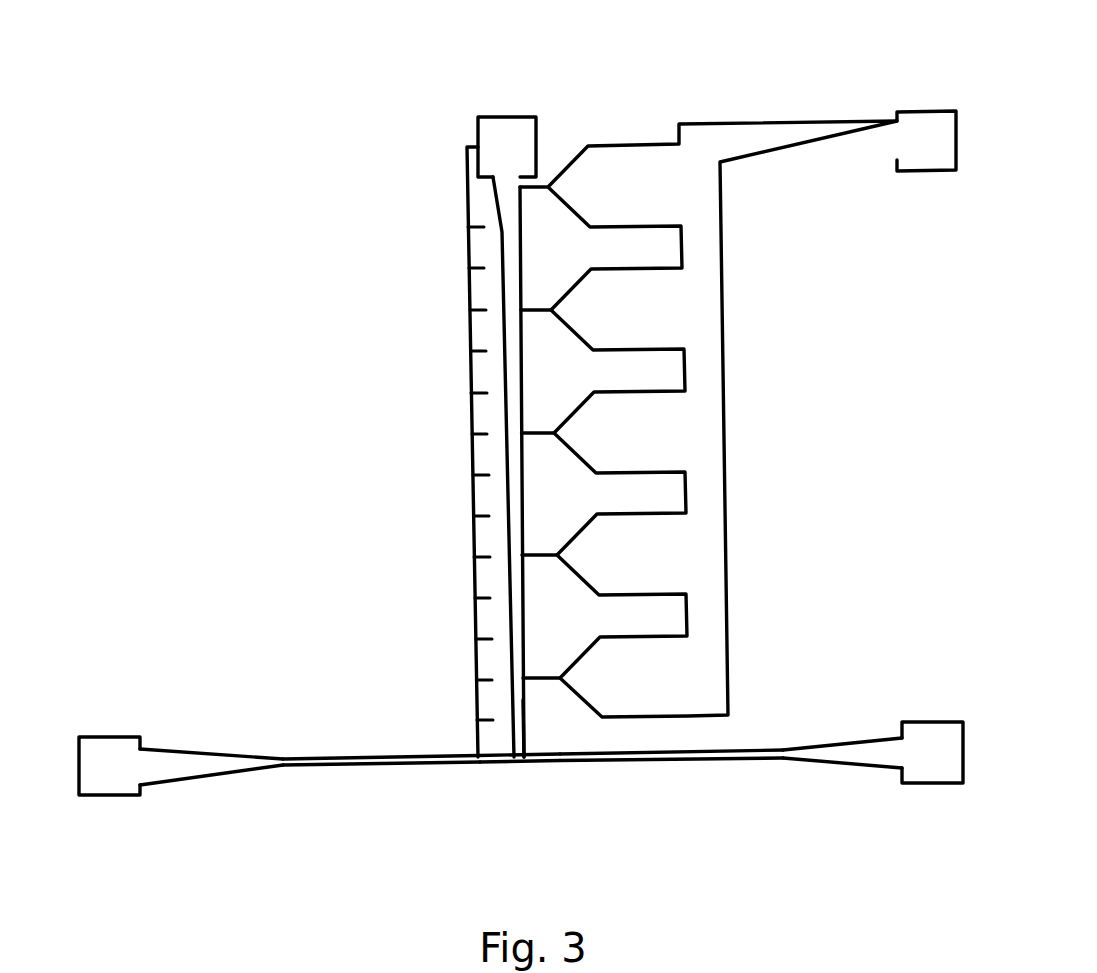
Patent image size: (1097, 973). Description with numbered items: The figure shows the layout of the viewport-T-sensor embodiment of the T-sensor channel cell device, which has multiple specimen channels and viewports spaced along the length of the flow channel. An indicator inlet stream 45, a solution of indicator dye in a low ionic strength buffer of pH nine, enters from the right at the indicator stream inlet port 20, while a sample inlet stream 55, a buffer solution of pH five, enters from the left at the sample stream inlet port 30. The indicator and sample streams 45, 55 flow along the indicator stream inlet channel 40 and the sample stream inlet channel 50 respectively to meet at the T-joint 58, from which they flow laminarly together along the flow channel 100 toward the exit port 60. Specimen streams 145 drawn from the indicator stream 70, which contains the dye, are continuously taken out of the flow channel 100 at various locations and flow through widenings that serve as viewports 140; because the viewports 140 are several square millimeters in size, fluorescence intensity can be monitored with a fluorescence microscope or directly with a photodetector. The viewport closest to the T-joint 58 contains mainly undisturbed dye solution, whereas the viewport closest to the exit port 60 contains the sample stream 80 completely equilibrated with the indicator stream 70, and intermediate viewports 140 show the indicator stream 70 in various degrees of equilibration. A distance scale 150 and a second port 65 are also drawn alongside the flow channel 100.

The indicator stream inlet port 20 is at (933, 733).
The sample stream inlet port 30 is at (98, 750).
The indicator stream inlet channel 40 is at (727, 760).
The indicator inlet stream 45 is at (642, 762).
The sample stream inlet channel 50 is at (315, 767).
The sample inlet stream 55 is at (403, 765).
The T-joint 58 is at (519, 765).
The exit port 60 is at (499, 130).
The second outlet port 65 is at (933, 127).
The indicator stream 70 is at (518, 470).
The sample stream 80 is at (510, 377).
The flow channel 100 is at (528, 724).
The viewports 140 is at (670, 183).
The specimen streams 145 is at (540, 186).
The distance scale 150 is at (471, 532).